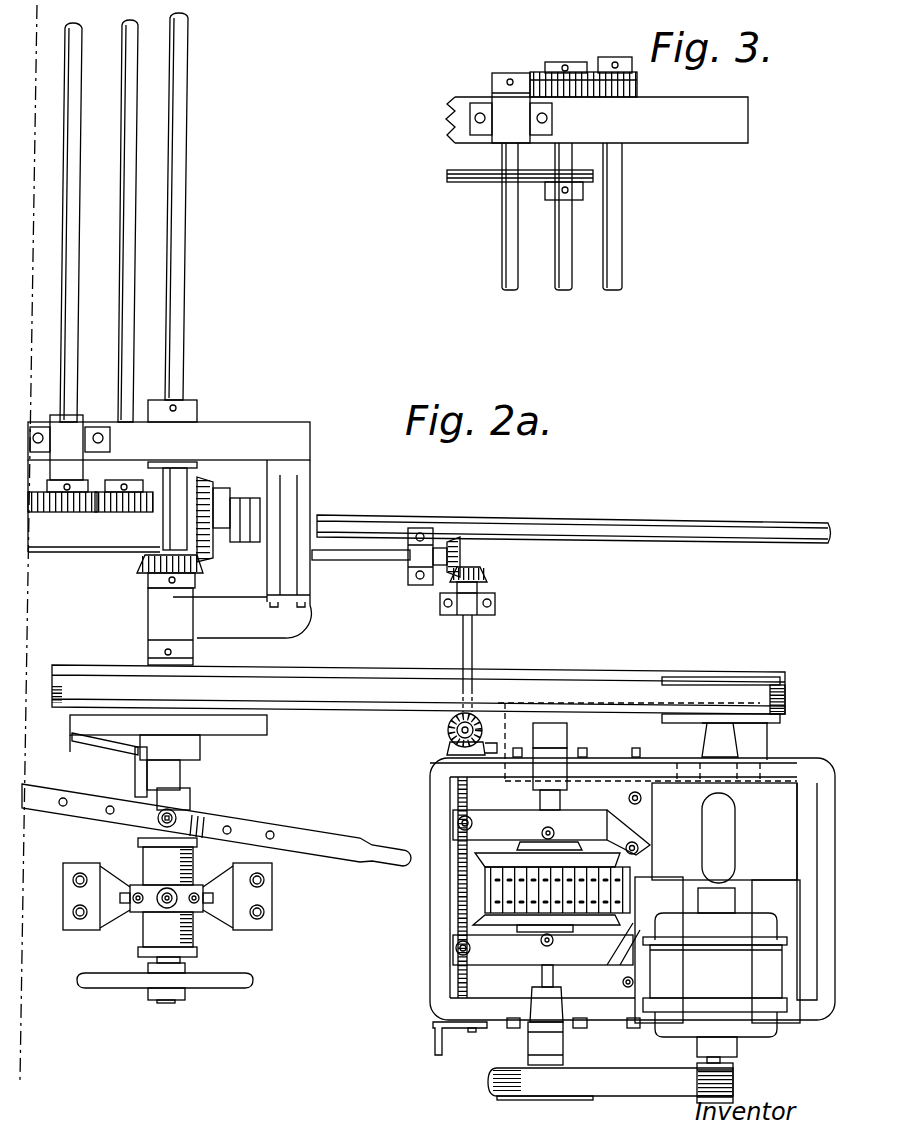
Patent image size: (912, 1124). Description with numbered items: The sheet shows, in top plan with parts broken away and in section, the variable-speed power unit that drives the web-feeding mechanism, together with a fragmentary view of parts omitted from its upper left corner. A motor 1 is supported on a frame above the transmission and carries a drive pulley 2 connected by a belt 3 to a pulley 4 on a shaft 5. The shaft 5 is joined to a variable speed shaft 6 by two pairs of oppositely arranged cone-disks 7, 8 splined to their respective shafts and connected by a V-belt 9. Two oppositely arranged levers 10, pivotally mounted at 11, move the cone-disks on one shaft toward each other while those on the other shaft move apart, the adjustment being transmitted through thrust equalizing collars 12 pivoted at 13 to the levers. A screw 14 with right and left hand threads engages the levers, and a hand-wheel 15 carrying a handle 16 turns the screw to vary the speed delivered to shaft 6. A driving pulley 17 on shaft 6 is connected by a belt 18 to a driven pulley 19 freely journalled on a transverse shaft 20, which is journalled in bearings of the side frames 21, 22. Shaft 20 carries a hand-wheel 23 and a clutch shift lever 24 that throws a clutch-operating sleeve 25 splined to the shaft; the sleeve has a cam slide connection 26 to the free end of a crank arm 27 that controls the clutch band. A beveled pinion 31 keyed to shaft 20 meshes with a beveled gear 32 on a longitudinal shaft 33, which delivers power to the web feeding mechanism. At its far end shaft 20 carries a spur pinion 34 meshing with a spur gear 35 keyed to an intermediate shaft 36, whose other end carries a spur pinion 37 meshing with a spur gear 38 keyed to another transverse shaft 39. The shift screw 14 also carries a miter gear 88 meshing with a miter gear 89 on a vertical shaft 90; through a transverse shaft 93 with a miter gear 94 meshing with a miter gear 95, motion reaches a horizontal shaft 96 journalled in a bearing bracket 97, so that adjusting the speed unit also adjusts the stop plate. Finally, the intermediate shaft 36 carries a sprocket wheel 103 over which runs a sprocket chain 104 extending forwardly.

In FIG. 2A, the motor 1 is at (715, 975).
In FIG. 2A, the drive pulley 2 is at (728, 1067).
In FIG. 2A, the belt 3 is at (645, 1050).
In FIG. 2A, the pulley 4 is at (573, 1067).
In FIG. 2A, the shaft 5 is at (553, 978).
In FIG. 2A, the variable speed shaft 6 is at (712, 730).
In FIG. 2A, the cone-disks 7 is at (480, 913).
In FIG. 2A, the cone-disks 8 is at (668, 837).
In FIG. 2A, the V-belt 9 is at (617, 890).
In FIG. 2A, the levers 10 is at (543, 887).
In FIG. 2A, the pivots 11 is at (628, 889).
In FIG. 2A, the thrust equalizing collars 12 is at (517, 947).
In FIG. 2A, the pivot 13 is at (555, 828).
In FIG. 2A, the screw 14 is at (458, 862).
In FIG. 2A, the hand-wheel 15 is at (472, 1031).
In FIG. 2A, the handle 16 is at (433, 1042).
In FIG. 2A, the driving pulley 17 is at (725, 677).
In FIG. 2A, the belt 18 is at (505, 692).
In FIG. 2A, the driven pulley 19 is at (65, 717).
In FIG. 3, the transverse shaft 20 is at (612, 230).
In FIG. 2A, the transverse shaft 20 is at (190, 108).
In FIG. 2A, the side frame 21 is at (245, 420).
In FIG. 3, the side frame 22 is at (695, 137).
In FIG. 2A, the hand-wheel 23 is at (220, 975).
In FIG. 2A, the clutch shift lever 24 is at (347, 857).
In FIG. 2A, the clutch-operating sleeve 25 is at (190, 797).
In FIG. 2A, the cam slide connection 26 is at (137, 772).
In FIG. 2A, the crank arm 27 is at (112, 753).
In FIG. 2A, the beveled pinion 31 is at (137, 568).
In FIG. 2A, the beveled gear 32 is at (213, 477).
In FIG. 2A, the longitudinal shaft 33 is at (570, 520).
In FIG. 3, the spur pinion 34 is at (637, 88).
In FIG. 3, the spur gear 35 is at (536, 72).
In FIG. 3, the intermediate shaft 36 is at (560, 257).
In FIG. 2A, the intermediate shaft 36 is at (118, 100).
In FIG. 2A, the spur pinion 37 is at (147, 517).
In FIG. 2A, the spur gear 38 is at (88, 512).
In FIG. 3, the transverse shaft 39 is at (502, 272).
In FIG. 2A, the transverse shaft 39 is at (77, 193).
In FIG. 2A, the miter gear 88 is at (450, 748).
In FIG. 2A, the miter gear 89 is at (448, 737).
In FIG. 2A, the vertical shaft 90 is at (448, 727).
In FIG. 2A, the transverse shaft 93 is at (468, 647).
In FIG. 2A, the miter gear 94 is at (487, 570).
In FIG. 2A, the miter gear 95 is at (460, 555).
In FIG. 2A, the horizontal shaft 96 is at (378, 558).
In FIG. 2A, the bearing bracket 97 is at (415, 558).
In FIG. 3, the sprocket wheel 103 is at (558, 200).
In FIG. 3, the sprocket chain 104 is at (458, 182).